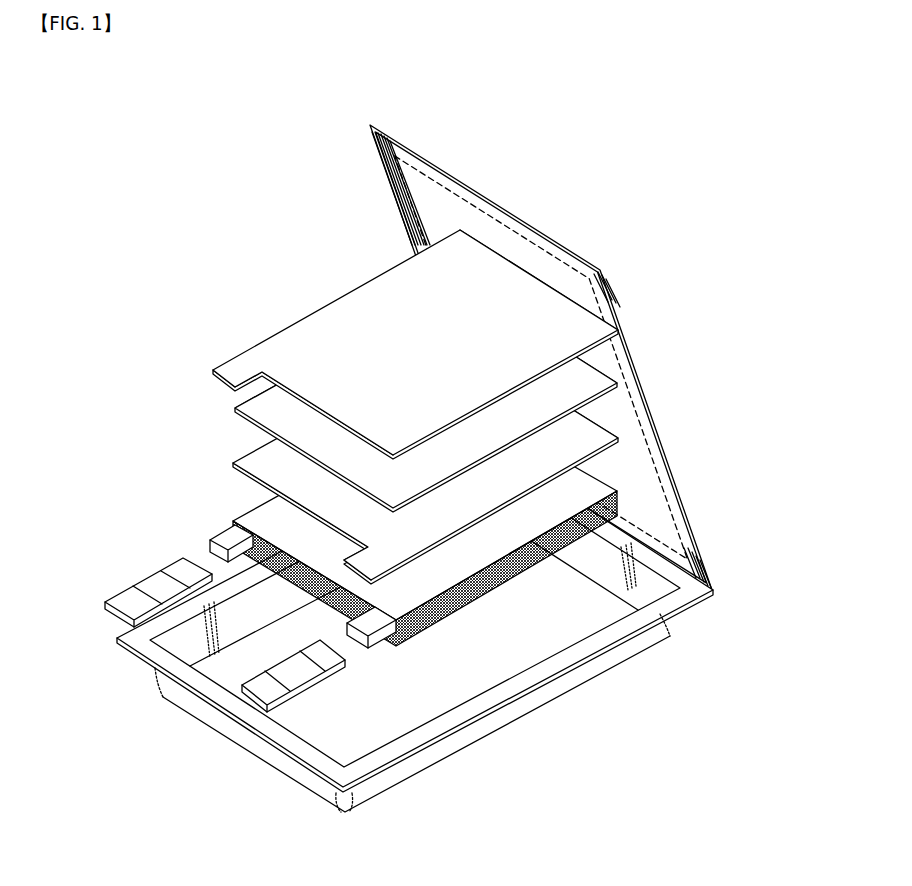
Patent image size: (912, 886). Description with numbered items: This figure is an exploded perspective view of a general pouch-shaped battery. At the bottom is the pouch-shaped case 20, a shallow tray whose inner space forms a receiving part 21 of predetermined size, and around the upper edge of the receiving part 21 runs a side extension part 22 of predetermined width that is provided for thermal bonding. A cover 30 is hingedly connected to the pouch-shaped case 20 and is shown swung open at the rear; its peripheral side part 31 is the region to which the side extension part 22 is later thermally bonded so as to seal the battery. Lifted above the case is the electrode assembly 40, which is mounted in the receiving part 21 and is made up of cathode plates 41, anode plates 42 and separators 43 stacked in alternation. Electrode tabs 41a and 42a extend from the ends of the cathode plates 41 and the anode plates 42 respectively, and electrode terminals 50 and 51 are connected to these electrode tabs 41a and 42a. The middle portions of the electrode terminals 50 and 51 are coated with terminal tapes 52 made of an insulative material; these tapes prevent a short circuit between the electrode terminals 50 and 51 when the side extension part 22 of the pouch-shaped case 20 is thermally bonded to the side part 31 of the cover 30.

The pouch-shaped case 20 is at (409, 647).
The receiving part 21 is at (432, 697).
The side extension part 22 is at (213, 695).
The cover 30 is at (577, 345).
The side part 31 is at (518, 216).
The electrode assembly 40 is at (355, 508).
The cathode plates 41 is at (357, 300).
The electrode tab 41a is at (222, 533).
The anode plates 42 is at (262, 477).
The electrode tab 42a is at (372, 633).
The separators 43 is at (262, 416).
The electrode terminal 50 is at (105, 606).
The electrode terminal 51 is at (272, 692).
The terminal tapes 52 is at (130, 592).